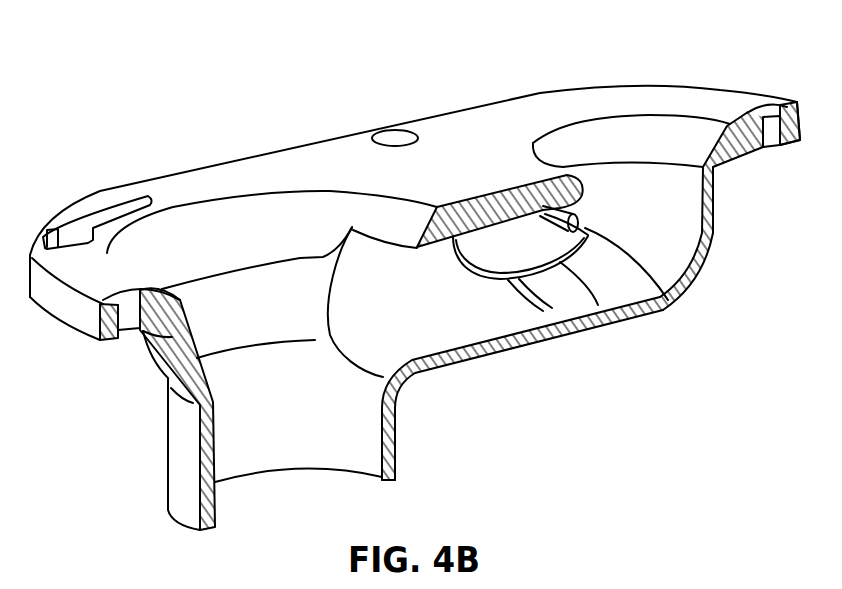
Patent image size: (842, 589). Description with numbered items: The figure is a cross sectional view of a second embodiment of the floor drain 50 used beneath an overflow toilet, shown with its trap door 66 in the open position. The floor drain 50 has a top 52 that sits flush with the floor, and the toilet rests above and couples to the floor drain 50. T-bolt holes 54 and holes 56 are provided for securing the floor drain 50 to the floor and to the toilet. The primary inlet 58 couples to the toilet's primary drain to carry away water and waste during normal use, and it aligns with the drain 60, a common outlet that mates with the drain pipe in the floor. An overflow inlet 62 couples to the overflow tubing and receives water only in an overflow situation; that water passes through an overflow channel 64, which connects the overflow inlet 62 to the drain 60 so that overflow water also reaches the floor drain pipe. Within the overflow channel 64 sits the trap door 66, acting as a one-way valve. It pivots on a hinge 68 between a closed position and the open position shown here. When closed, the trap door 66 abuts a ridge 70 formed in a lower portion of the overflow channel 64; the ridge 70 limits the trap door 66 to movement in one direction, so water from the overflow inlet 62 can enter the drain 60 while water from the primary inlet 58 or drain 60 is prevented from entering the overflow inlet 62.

The floor drain 50 is at (289, 119).
The top 52 is at (732, 98).
The t-bolt holes 54 is at (82, 220).
The holes 56 is at (128, 318).
The primary inlet 58 is at (235, 220).
The drain 60 is at (175, 478).
The overflow inlet 62 is at (635, 128).
The overflow channel 64 is at (423, 317).
The trap door 66 is at (497, 257).
The hinge 68 is at (676, 303).
The ridge 70 is at (542, 322).